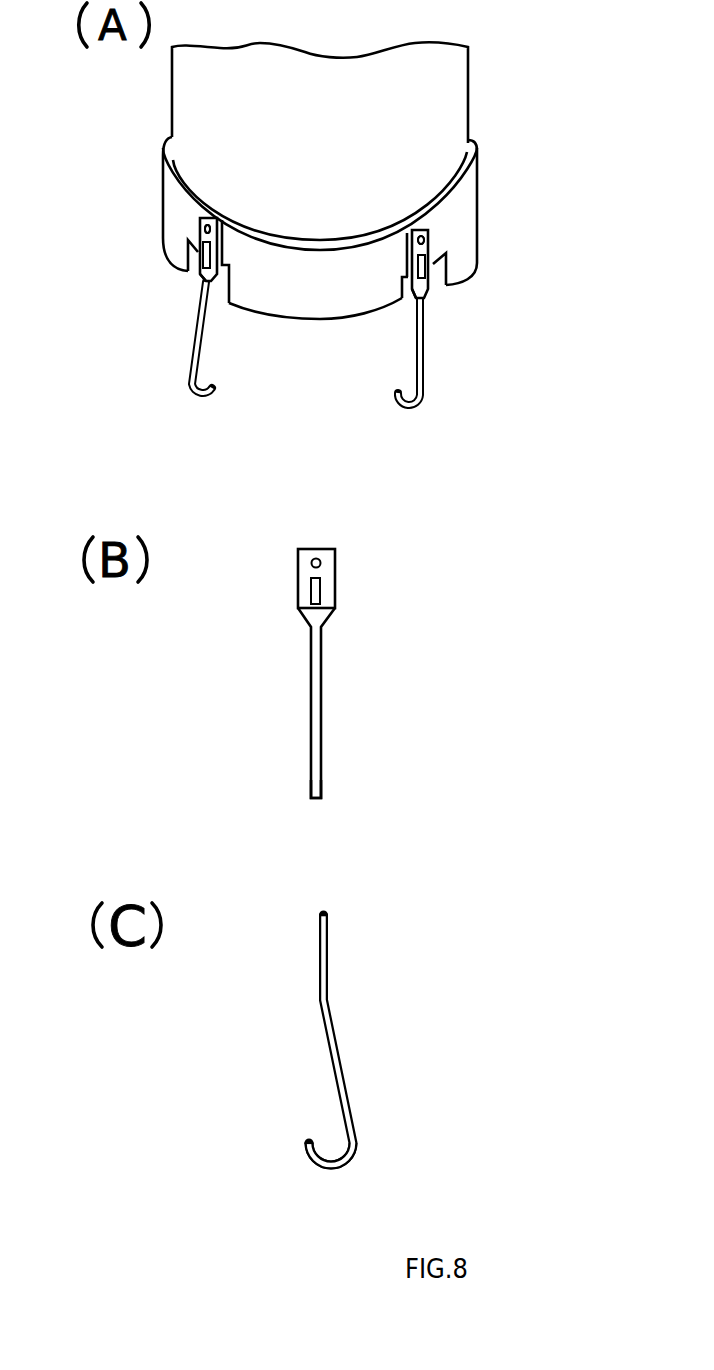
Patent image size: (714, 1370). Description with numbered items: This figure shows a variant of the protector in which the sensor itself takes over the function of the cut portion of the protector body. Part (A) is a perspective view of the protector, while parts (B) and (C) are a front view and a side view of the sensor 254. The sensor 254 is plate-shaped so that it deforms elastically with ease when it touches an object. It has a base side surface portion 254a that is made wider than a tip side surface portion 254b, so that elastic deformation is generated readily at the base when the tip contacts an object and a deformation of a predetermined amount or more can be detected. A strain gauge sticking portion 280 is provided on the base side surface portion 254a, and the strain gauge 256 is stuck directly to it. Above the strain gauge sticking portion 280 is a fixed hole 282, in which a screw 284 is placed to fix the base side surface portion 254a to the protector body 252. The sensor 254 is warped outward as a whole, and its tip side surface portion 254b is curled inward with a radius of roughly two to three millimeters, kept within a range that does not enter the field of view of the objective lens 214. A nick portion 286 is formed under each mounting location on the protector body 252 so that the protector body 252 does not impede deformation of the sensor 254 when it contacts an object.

The objective lens 214 is at (437, 77).
The protector body 252 is at (468, 212).
The sensor 254 is at (190, 354).
The base side surface portion 254a is at (335, 592).
The tip side surface portion 254b is at (322, 780).
The strain gauge 256 is at (198, 276).
The strain gauge sticking portion 280 is at (310, 592).
The fixed hole 282 is at (320, 563).
The screw 284 is at (208, 224).
The nick portion 286 is at (402, 300).